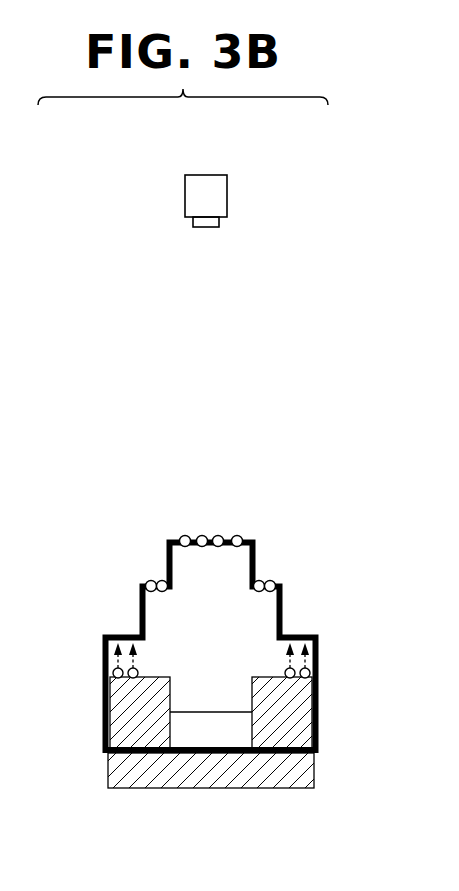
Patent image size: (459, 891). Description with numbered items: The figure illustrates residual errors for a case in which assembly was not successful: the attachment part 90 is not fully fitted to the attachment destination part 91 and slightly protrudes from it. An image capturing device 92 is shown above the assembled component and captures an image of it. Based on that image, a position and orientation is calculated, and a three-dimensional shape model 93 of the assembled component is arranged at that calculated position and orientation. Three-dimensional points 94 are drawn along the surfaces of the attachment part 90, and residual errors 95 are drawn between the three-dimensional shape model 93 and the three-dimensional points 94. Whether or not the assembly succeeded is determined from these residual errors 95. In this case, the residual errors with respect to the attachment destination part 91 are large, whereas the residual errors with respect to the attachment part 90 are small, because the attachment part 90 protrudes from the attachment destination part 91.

The attachment part 90 is at (157, 622).
The attachment destination part 91 is at (272, 778).
The image capturing device 92 is at (193, 175).
The three-dimensional shape model 93 is at (105, 713).
The three-dimensional points 94 is at (232, 538).
The residual errors 95 is at (112, 662).